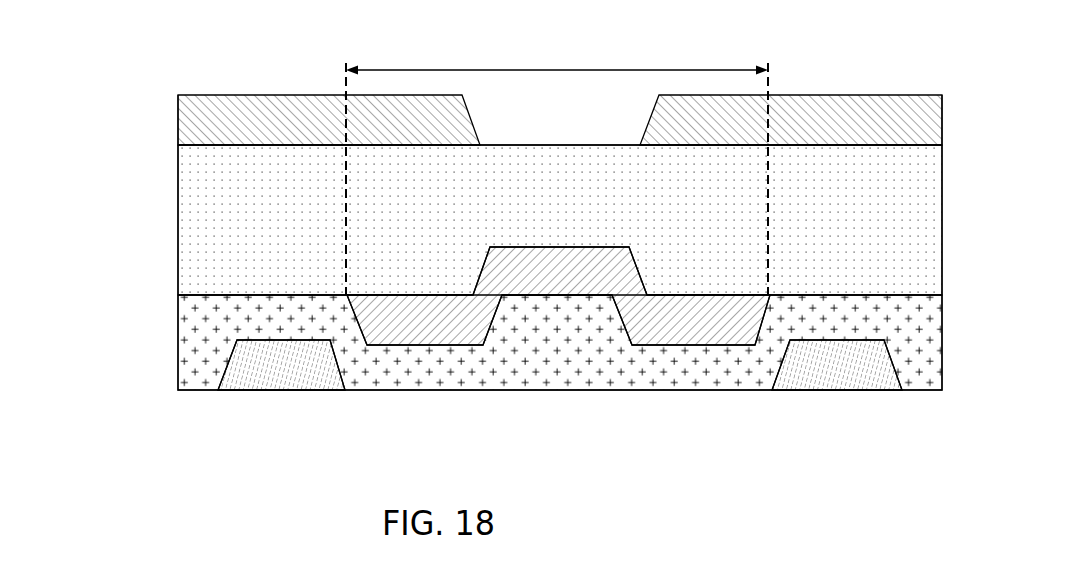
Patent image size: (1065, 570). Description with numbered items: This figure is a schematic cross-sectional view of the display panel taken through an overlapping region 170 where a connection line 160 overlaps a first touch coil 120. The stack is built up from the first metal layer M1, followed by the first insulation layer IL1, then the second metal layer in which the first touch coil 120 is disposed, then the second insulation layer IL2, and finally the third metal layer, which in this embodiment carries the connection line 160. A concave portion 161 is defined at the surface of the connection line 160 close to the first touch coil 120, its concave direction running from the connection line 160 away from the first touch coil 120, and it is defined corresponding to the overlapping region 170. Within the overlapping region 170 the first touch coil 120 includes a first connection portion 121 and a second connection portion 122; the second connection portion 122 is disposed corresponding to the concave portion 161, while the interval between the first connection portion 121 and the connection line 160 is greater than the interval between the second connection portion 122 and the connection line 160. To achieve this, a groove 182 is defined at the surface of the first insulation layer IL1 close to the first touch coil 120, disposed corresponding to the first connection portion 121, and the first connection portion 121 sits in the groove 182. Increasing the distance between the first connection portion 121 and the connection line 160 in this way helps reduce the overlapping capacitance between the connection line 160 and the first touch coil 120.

The connection line 160 is at (192, 120).
The first touch coil 120 is at (378, 326).
The first connection portion 121 is at (451, 330).
The second connection portion 122 is at (590, 283).
The groove 182 is at (428, 345).
The concave portion 161 is at (575, 130).
The overlapping region 170 is at (557, 56).
The first insulation layer IL1 is at (186, 318).
The second insulation layer IL2 is at (186, 204).
The first metal layer M1 is at (237, 368).